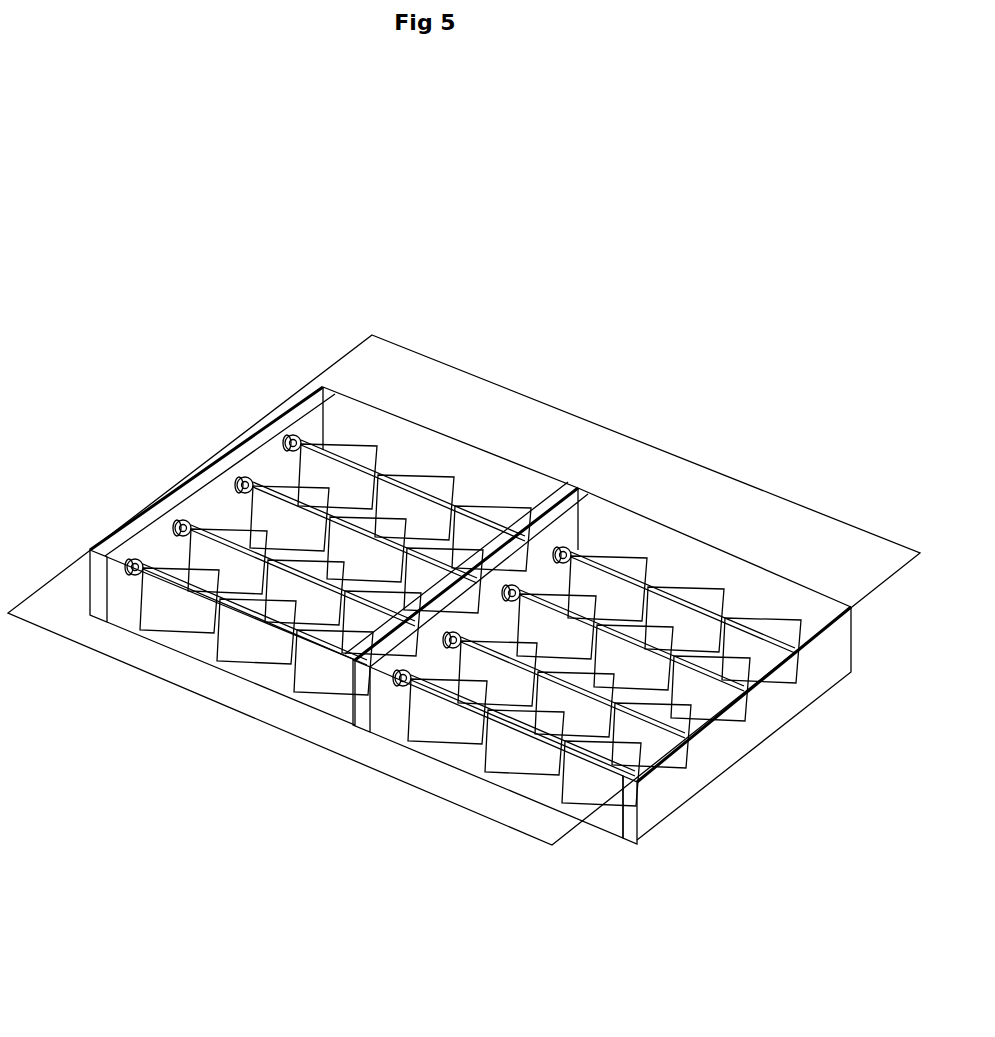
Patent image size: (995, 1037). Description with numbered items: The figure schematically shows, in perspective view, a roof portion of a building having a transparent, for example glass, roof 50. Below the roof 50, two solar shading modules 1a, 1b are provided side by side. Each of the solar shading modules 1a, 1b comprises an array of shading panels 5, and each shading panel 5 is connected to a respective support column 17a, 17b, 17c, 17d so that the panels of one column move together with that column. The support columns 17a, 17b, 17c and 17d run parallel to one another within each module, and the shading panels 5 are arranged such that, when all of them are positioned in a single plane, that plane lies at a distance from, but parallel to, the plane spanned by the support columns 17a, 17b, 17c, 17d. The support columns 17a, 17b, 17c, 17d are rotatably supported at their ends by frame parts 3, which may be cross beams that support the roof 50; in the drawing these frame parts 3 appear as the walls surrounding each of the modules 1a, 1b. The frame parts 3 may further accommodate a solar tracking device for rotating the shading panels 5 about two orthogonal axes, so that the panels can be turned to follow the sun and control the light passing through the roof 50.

The roof 50 is at (673, 480).
The solar shading module 1a is at (249, 678).
The solar shading module 1b is at (442, 758).
The frame parts 3 is at (290, 407).
The shading panels 5 is at (357, 442).
The support column 17a is at (380, 463).
The support column 17b is at (253, 483).
The support column 17c is at (190, 523).
The support column 17d is at (133, 563).